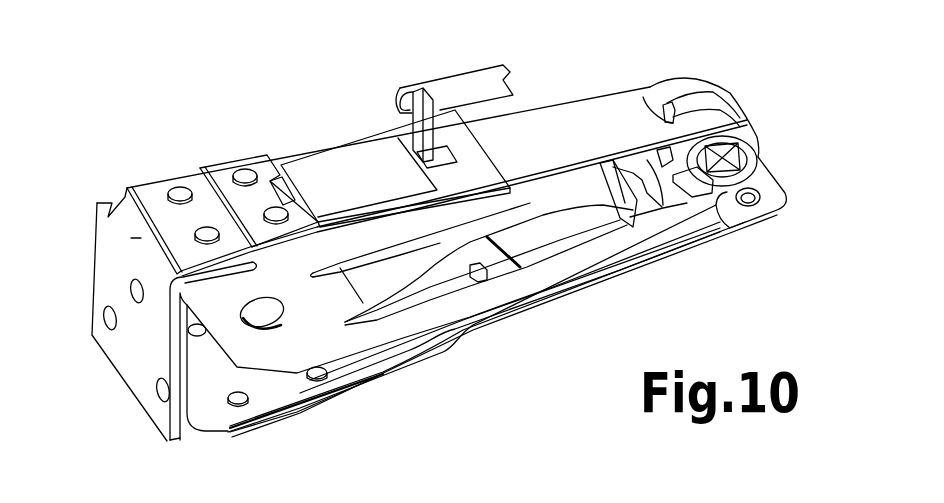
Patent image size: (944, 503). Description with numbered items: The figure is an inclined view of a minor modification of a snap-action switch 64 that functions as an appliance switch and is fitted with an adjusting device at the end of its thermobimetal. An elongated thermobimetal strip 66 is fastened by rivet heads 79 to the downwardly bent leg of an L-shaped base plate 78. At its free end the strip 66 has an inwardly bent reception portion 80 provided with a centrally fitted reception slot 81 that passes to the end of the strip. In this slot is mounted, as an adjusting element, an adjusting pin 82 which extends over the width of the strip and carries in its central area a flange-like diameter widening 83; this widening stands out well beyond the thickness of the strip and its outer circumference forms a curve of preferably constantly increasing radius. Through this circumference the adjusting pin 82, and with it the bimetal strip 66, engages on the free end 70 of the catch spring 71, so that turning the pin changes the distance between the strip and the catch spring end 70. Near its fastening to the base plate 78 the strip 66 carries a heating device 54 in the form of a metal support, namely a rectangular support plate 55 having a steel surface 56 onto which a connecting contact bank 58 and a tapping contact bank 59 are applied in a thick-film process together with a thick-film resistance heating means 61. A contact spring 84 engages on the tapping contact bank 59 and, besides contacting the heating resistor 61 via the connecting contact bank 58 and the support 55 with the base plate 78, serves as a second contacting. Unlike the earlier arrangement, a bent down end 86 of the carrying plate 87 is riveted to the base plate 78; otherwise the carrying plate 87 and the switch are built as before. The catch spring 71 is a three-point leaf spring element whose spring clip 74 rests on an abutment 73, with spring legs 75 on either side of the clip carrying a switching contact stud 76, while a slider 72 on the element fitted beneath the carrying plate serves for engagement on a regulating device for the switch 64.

The heating device 54 is at (247, 115).
The support plate 55 is at (510, 95).
The steel surface 56 is at (220, 173).
The connecting contact bank 58 is at (283, 185).
The tapping contact bank 59 is at (415, 158).
The thick-film resistance heating means 61 is at (357, 190).
The snap-action switch 64 is at (119, 141).
The thermobimetal strip 66 is at (150, 203).
The end of the catch spring 70 is at (777, 192).
The catch spring 71 is at (604, 293).
The slider 72 is at (458, 283).
The abutment 73 is at (633, 210).
The spring clip 74 is at (433, 256).
The spring legs 75 is at (537, 277).
The switching contact stud 76 is at (287, 307).
The base plate 78 is at (107, 280).
The rivet heads 79 is at (180, 190).
The reception portion 80 is at (755, 140).
The reception slot 81 is at (653, 115).
The adjusting pin 82 is at (731, 230).
The diameter widening 83 is at (722, 93).
The contact spring 84 is at (433, 90).
The bent down end 86 is at (188, 372).
The carrying plate 87 is at (283, 393).